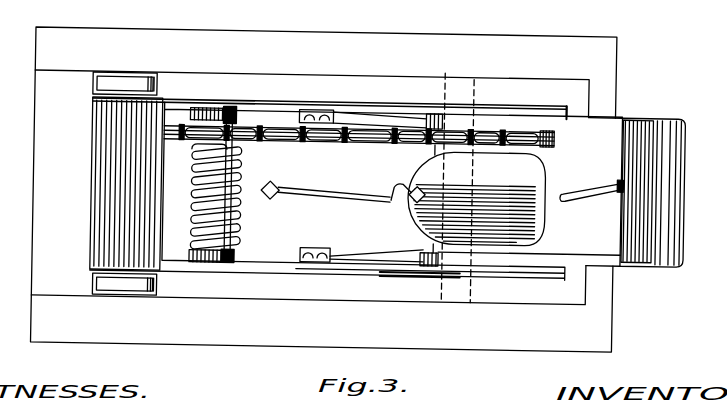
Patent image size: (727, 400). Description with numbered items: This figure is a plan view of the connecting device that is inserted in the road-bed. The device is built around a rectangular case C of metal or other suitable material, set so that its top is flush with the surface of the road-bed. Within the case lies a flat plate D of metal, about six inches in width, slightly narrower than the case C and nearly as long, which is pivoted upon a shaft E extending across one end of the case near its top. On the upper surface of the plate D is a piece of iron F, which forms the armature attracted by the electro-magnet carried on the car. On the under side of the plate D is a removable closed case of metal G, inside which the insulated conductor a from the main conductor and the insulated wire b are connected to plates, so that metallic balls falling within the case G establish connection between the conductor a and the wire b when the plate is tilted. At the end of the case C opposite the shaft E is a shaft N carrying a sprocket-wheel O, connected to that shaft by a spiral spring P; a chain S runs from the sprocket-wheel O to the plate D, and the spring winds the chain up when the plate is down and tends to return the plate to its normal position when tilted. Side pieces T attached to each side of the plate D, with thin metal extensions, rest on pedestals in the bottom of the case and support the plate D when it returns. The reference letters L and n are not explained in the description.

The top plate L is at (253, 98).
The sprocket-wheel O is at (262, 121).
The shaft N is at (256, 152).
The spiral spring P is at (194, 207).
The chain S is at (413, 70).
The side pieces T is at (432, 177).
The shaft E is at (477, 178).
The piece of iron F is at (564, 113).
The rectangular case C is at (617, 78).
The cylinder lining n is at (637, 191).
The closed case of metal G is at (476, 199).
The insulated conductor a is at (336, 200).
The insulated wire b is at (592, 200).
The flat plate D is at (558, 160).